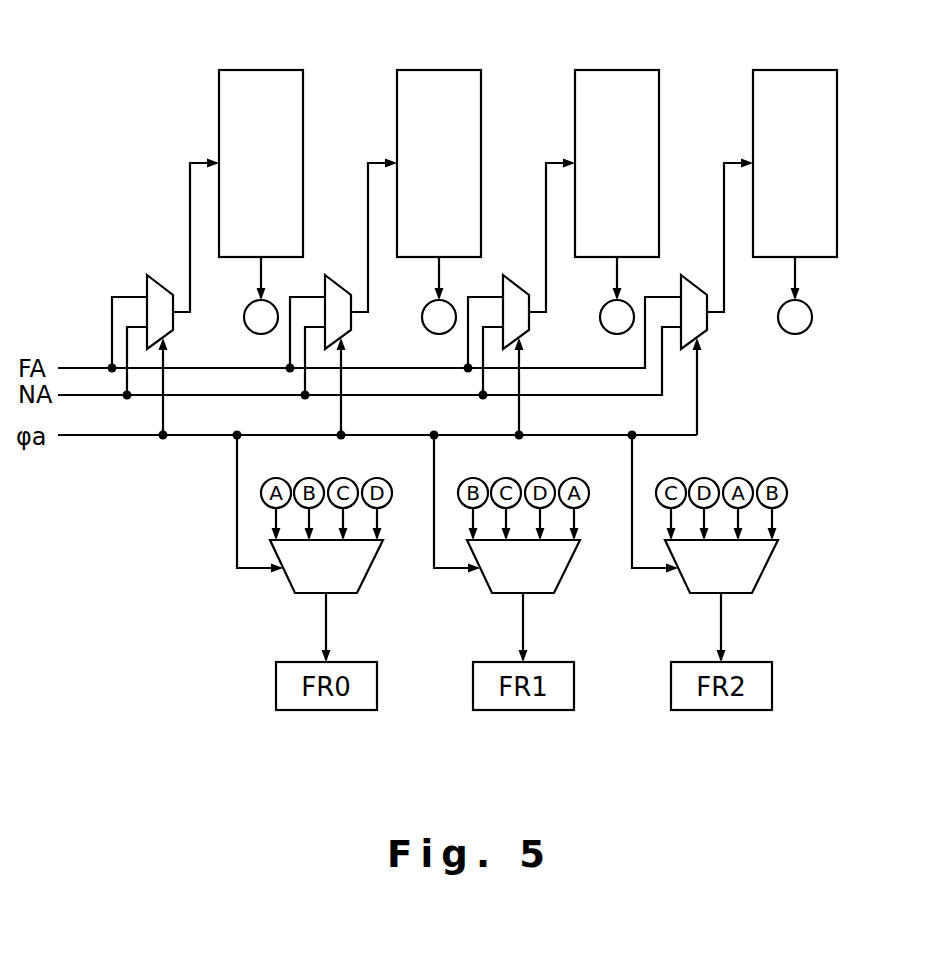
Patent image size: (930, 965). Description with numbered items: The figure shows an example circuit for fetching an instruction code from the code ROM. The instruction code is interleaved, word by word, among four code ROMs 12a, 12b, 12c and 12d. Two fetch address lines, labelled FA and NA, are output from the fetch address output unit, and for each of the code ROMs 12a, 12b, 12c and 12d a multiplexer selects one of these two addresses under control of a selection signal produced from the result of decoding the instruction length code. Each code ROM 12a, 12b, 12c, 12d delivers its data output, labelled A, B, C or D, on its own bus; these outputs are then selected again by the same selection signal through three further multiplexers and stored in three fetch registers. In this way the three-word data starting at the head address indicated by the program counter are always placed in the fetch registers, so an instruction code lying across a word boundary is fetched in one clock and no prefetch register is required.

The code ROM 12a is at (265, 98).
The code ROM 12b is at (443, 98).
The code ROM 12c is at (621, 98).
The code ROM 12d is at (799, 98).